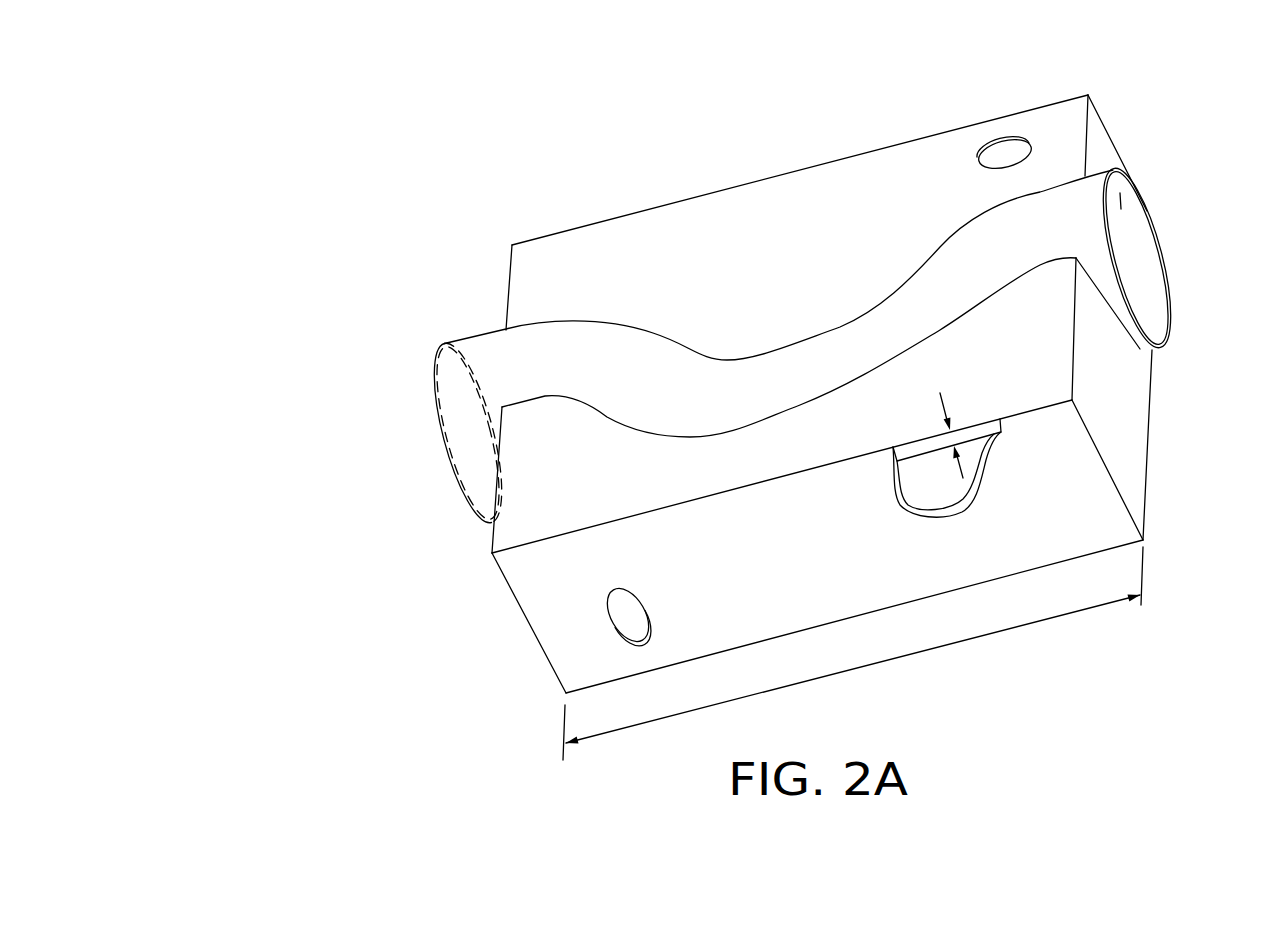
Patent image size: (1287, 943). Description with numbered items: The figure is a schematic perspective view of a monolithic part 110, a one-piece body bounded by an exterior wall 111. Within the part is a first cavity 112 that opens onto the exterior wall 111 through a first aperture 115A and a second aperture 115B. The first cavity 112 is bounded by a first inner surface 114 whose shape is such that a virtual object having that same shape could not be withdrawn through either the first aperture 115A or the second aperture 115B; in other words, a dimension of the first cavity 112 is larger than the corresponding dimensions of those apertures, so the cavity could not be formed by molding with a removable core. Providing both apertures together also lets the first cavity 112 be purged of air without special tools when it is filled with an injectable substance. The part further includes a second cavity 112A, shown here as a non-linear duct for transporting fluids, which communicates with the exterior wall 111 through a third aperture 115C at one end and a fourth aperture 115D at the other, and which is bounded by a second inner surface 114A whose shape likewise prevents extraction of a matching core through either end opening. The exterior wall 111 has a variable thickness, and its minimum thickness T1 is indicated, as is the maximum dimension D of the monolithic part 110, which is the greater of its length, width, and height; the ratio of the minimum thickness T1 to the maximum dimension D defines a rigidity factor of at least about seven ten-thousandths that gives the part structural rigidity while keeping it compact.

The monolithic part 110 is at (492, 114).
The exterior wall 111 is at (763, 225).
The first cavity 112 is at (953, 500).
The second cavity 112A is at (1135, 240).
The first inner surface 114 is at (978, 443).
The second inner surface 114A is at (1122, 208).
The first aperture 115A is at (620, 610).
The second aperture 115B is at (1005, 158).
The third aperture 115C is at (1172, 313).
The fourth aperture 115D is at (450, 388).
The minimum thickness T1 is at (956, 479).
The maximum dimension D is at (870, 668).